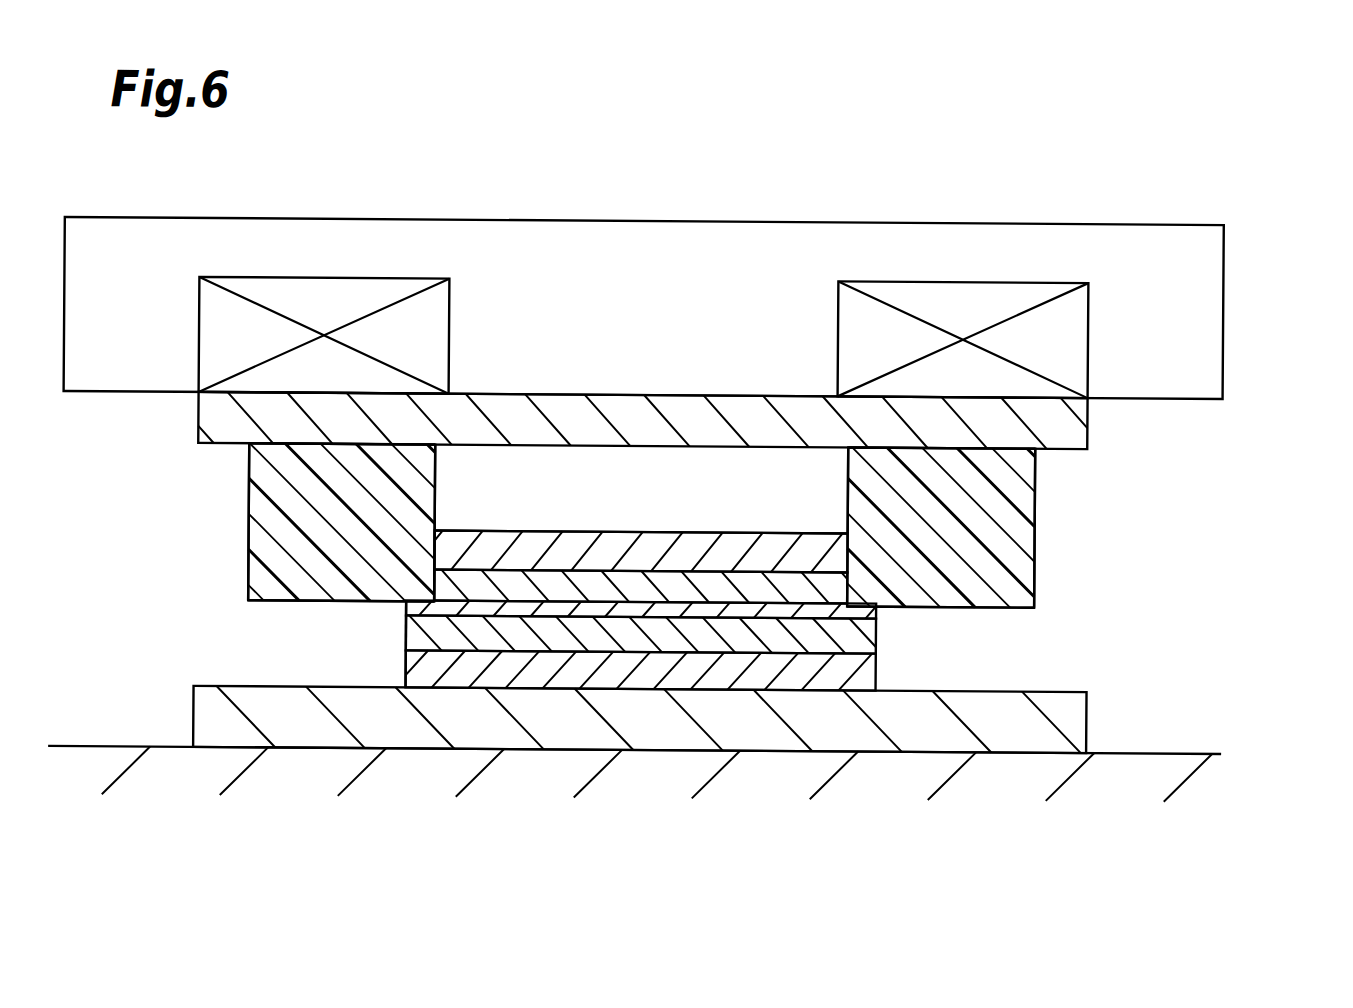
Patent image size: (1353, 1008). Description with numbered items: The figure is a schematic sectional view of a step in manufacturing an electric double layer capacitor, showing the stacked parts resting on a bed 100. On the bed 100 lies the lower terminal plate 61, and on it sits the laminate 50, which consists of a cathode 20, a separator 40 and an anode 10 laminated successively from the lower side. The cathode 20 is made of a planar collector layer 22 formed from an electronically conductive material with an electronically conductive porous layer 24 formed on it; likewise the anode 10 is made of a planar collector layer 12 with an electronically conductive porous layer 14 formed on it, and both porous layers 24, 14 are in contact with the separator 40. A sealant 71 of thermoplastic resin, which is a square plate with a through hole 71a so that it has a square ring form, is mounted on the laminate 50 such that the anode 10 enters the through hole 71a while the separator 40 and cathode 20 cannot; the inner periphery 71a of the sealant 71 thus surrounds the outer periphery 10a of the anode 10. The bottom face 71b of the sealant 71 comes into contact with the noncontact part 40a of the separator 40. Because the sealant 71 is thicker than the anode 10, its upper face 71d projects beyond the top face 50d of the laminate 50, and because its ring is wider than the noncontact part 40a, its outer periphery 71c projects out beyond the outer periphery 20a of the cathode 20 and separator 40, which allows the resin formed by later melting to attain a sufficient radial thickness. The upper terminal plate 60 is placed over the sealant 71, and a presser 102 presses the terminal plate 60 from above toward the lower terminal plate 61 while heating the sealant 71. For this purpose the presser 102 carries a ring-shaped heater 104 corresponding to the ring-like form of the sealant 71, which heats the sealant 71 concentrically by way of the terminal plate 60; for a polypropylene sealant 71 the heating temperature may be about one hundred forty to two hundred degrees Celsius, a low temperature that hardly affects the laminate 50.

The presser 102 is at (1222, 292).
The ring-shaped heater 104 is at (338, 280).
The terminal plate 60 is at (1087, 420).
The sealant 71 is at (1035, 467).
The through hole 71a is at (437, 467).
The bottom face 71b is at (270, 608).
The outer periphery 71c is at (248, 553).
The upper face 71d is at (268, 446).
The laminate 50 is at (769, 659).
The top face 50d is at (657, 532).
The anode 10 is at (817, 563).
The outer periphery of the anode 10a is at (435, 535).
The collector layer 12 is at (848, 550).
The porous layer 14 is at (848, 576).
The separator 40 is at (877, 611).
The noncontact part 40a is at (406, 603).
The cathode 20 is at (745, 660).
The outer periphery of the cathode 20a is at (407, 680).
The porous layer 24 is at (877, 633).
The collector layer 22 is at (877, 670).
The terminal plate 61 is at (1070, 724).
The bed 100 is at (118, 750).